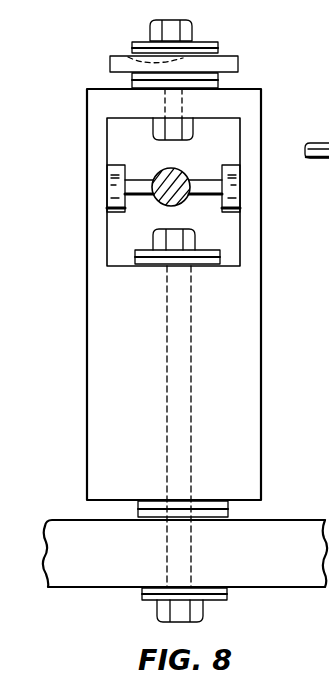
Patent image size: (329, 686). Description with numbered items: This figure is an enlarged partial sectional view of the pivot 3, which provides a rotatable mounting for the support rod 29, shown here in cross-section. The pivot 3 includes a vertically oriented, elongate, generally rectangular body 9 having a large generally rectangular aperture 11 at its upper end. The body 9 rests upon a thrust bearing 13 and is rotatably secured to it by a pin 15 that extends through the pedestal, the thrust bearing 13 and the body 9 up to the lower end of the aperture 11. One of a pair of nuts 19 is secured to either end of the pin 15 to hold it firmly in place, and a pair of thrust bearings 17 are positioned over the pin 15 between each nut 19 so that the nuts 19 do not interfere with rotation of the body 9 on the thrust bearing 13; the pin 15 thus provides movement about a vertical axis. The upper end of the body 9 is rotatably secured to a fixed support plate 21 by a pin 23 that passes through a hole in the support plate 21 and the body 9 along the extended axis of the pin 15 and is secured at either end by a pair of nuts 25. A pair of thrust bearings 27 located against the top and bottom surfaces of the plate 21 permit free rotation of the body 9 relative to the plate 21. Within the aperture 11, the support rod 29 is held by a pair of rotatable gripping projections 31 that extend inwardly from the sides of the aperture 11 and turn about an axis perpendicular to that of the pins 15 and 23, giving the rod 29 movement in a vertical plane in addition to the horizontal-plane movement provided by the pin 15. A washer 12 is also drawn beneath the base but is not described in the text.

The pivot 3 is at (274, 332).
The body 9 is at (262, 362).
The aperture 11 is at (232, 142).
The washer 12 is at (227, 595).
The thrust bearing 13 is at (230, 505).
The pin 15 is at (190, 340).
The thrust bearings 17 is at (142, 251).
The nuts 19 is at (195, 237).
The support plate 21 is at (238, 65).
The pin 23 is at (125, 53).
The nuts 25 is at (191, 29).
The thrust bearings 27 is at (218, 47).
The support rod 29 is at (181, 203).
The gripping projections 31 is at (131, 180).